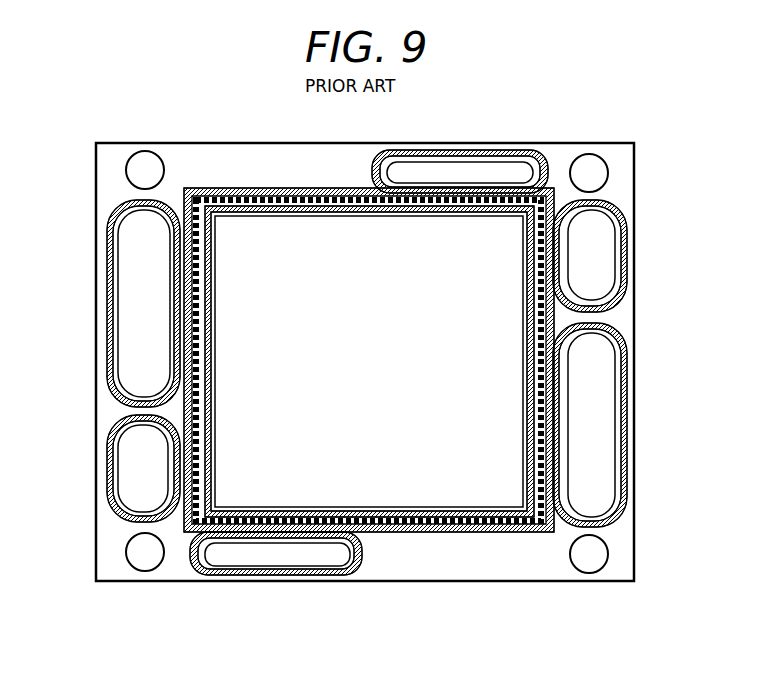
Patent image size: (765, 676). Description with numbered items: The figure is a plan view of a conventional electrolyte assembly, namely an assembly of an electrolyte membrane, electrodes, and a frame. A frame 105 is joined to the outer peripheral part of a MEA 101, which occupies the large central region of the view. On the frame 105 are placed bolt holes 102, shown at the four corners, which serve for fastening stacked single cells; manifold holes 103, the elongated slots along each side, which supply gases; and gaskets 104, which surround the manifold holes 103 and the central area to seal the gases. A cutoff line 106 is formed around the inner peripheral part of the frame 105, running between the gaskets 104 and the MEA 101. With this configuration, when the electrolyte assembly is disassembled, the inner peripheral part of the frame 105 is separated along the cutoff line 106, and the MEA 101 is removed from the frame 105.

The MEA 101 is at (222, 272).
The bolt holes 102 is at (143, 162).
The manifold holes 103 is at (473, 162).
The gaskets 104 is at (236, 216).
The frame 105 is at (433, 582).
The cutoff line 106 is at (357, 205).